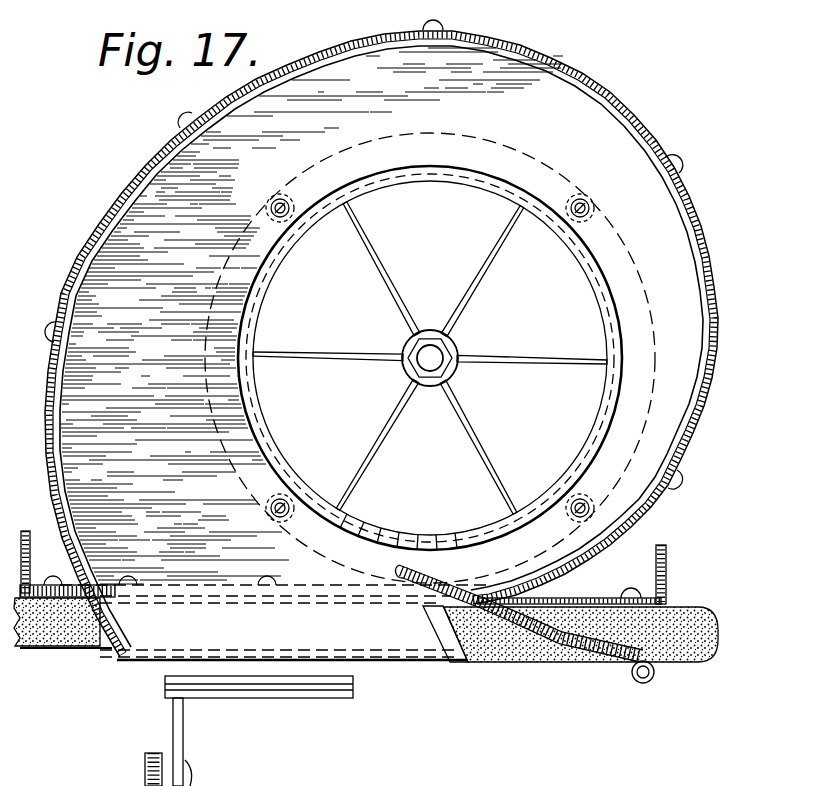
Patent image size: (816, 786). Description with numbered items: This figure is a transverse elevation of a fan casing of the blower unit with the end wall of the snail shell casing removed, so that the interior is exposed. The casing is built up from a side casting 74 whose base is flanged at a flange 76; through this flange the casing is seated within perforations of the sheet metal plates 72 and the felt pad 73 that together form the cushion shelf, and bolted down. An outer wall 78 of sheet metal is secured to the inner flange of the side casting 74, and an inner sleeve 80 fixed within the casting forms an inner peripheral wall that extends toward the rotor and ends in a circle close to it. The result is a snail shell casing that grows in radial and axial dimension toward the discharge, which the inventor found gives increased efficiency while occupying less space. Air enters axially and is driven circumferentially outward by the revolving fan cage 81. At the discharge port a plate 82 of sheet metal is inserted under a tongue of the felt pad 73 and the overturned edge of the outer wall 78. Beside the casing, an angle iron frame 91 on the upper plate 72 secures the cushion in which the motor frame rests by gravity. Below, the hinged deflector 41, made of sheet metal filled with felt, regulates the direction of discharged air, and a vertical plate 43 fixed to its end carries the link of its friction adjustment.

The side casting 74 is at (658, 232).
The outer wall 78 is at (712, 256).
The fan cage 81 is at (615, 397).
The inner sleeve 80 is at (624, 443).
The flange 76 is at (222, 592).
The angle iron frame 91 is at (30, 530).
The sheet metal plate 72 is at (668, 600).
The felt pad 73 is at (718, 613).
The plate 82 is at (595, 655).
The hinged cover or deflector 41 is at (330, 690).
The vertical plate 43 is at (183, 733).